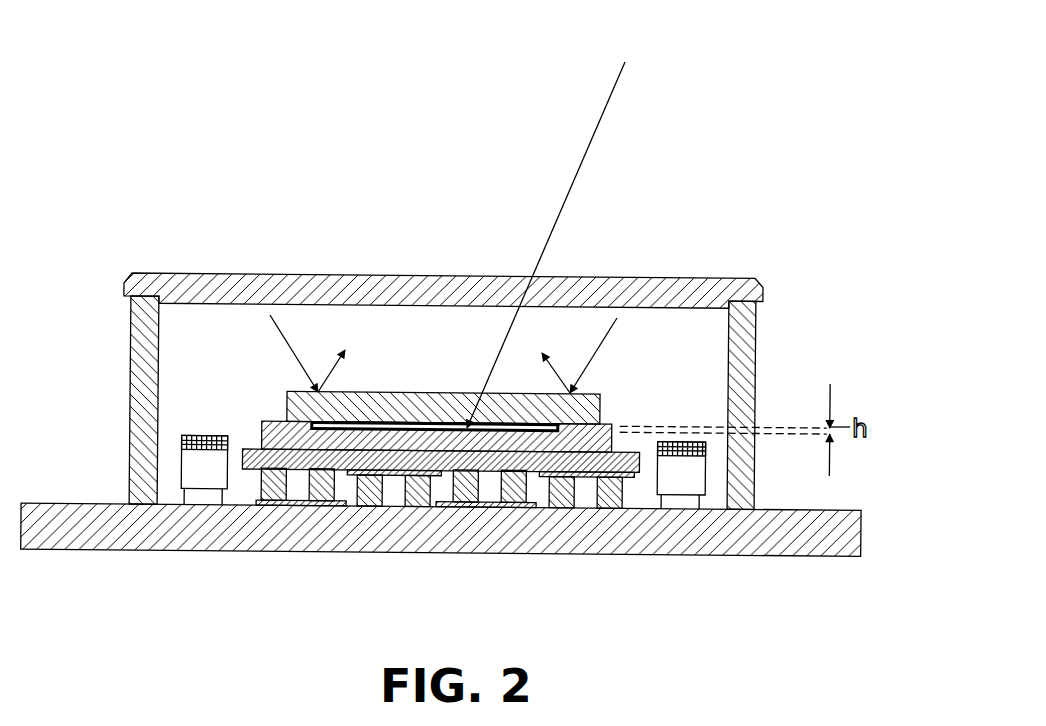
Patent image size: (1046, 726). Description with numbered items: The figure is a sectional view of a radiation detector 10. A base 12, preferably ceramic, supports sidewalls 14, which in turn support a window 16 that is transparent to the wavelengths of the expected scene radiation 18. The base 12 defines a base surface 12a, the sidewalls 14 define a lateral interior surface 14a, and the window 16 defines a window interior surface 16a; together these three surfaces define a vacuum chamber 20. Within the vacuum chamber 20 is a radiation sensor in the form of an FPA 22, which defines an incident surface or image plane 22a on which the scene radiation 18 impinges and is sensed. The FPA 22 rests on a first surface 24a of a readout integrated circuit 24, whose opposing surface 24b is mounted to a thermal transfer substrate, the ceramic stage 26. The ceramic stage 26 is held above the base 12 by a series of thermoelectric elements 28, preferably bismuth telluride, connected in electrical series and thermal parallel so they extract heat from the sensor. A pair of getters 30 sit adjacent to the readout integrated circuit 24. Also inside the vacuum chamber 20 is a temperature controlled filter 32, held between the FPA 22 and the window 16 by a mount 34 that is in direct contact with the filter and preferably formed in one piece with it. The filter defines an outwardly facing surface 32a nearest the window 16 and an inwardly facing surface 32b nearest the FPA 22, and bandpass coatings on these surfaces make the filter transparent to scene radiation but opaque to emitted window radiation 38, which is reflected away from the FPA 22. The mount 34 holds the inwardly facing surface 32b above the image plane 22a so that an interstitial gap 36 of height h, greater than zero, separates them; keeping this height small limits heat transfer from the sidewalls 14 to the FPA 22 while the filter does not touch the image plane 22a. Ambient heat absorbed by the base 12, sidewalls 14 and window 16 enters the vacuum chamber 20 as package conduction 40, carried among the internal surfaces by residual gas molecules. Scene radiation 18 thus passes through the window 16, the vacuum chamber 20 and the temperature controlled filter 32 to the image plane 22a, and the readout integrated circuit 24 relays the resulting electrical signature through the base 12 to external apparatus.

The radiation detector 10 is at (142, 158).
The base 12 is at (100, 532).
The base surface 12a is at (720, 508).
The sidewalls 14 is at (755, 378).
The lateral interior surface 14a is at (160, 370).
The window 16 is at (672, 290).
The window interior surface 16a is at (703, 316).
The scene radiation 18 is at (585, 148).
The vacuum chamber 20 is at (713, 347).
The FPA 22 is at (288, 399).
The image plane 22a is at (470, 507).
The readout integrated circuit 24 is at (592, 455).
The first surface 24a is at (608, 424).
The opposing surface 24b is at (592, 430).
The ceramic stage 26 is at (622, 476).
The thermoelectric elements 28 is at (328, 474).
The getters 30 is at (200, 470).
The temperature controlled filter 32 is at (583, 398).
The outwardly facing surface 32a is at (445, 392).
The inwardly facing surface 32b is at (379, 392).
The mount 34 is at (267, 432).
The interstitial gap 36 is at (387, 445).
The window radiation 38 is at (602, 340).
The package conduction 40 is at (288, 342).